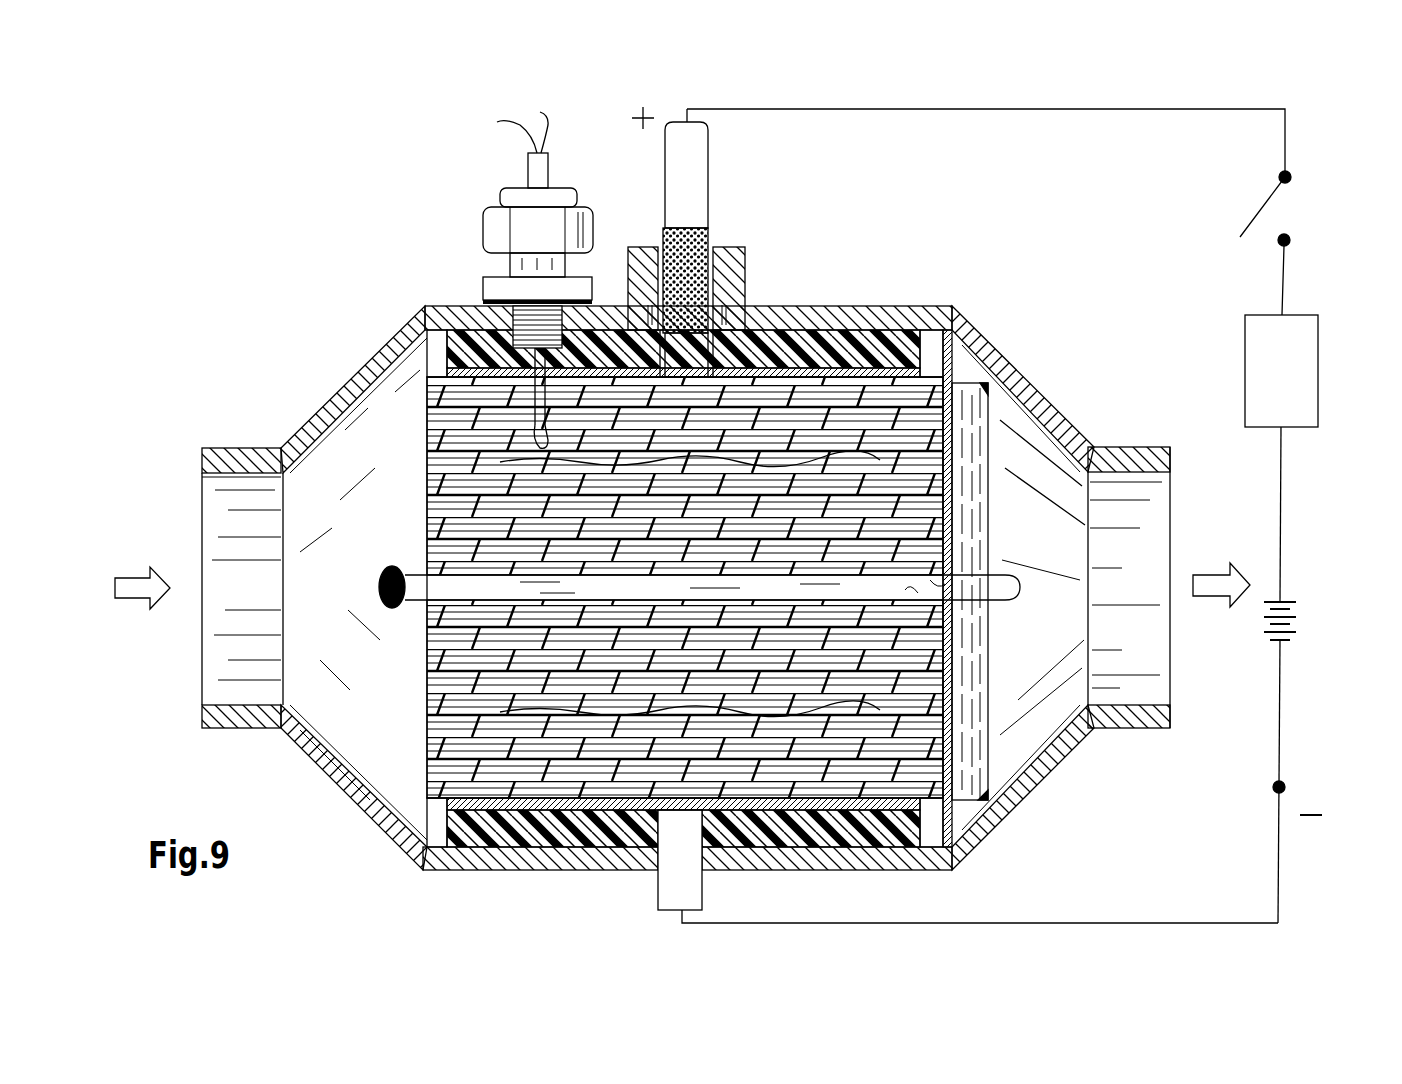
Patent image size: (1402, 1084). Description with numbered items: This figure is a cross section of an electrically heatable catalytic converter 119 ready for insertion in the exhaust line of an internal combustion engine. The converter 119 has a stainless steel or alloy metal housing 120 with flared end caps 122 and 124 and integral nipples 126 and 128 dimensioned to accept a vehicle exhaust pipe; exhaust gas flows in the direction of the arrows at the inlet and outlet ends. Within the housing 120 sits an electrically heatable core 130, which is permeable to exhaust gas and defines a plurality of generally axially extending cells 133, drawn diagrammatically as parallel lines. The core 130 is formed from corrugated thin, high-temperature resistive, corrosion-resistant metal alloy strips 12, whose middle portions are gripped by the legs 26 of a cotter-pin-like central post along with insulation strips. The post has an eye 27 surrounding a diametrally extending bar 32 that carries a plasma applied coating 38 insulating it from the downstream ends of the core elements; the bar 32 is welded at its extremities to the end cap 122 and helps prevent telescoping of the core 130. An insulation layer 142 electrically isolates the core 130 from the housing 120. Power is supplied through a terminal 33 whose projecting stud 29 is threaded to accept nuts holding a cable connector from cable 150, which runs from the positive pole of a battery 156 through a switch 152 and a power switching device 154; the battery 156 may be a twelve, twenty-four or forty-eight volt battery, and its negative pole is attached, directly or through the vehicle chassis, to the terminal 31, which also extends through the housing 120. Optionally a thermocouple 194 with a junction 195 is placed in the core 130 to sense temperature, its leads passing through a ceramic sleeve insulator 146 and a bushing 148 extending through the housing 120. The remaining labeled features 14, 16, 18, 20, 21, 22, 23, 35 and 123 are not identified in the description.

The metal alloy strip 12 is at (903, 765).
The upper heating element 14 is at (847, 462).
The center rod 16 is at (515, 592).
The monolith substrate 18 is at (558, 735).
The catalyst substrate 20 is at (500, 522).
The electrode terminal block 21 is at (686, 353).
The lower heating element 22 is at (776, 715).
The ground terminal 23 is at (675, 812).
The leg of central post 26 is at (487, 787).
The eye 27 is at (1012, 571).
The projecting stud 29 is at (707, 165).
The terminal 31 is at (695, 887).
The diametrally extending bar 32 is at (968, 668).
The terminal 33 is at (728, 207).
The electrode insulator 35 is at (722, 249).
The plasma applied coating 38 is at (958, 530).
The electrically heatable catalytic converter 119 is at (406, 190).
The housing 120 is at (478, 312).
The flared end cap 122 is at (992, 350).
The outlet chamber 123 is at (1000, 392).
The flared end cap 124 is at (243, 450).
The nipple 126 is at (1136, 450).
The nipple 128 is at (222, 452).
The core 130 is at (427, 690).
The axially extending cells 133 is at (442, 766).
The insulation layer 142 is at (772, 345).
The ceramic sleeve insulator 146 is at (550, 182).
The bushing 148 is at (505, 292).
The cable 150 is at (998, 110).
The switch 152 is at (1262, 208).
The power switching device 154 is at (1300, 362).
The battery 156 is at (1292, 616).
The thermocouple 194 is at (519, 408).
The junction 195 is at (522, 456).